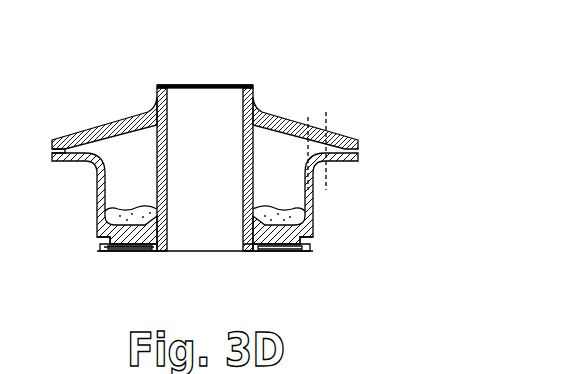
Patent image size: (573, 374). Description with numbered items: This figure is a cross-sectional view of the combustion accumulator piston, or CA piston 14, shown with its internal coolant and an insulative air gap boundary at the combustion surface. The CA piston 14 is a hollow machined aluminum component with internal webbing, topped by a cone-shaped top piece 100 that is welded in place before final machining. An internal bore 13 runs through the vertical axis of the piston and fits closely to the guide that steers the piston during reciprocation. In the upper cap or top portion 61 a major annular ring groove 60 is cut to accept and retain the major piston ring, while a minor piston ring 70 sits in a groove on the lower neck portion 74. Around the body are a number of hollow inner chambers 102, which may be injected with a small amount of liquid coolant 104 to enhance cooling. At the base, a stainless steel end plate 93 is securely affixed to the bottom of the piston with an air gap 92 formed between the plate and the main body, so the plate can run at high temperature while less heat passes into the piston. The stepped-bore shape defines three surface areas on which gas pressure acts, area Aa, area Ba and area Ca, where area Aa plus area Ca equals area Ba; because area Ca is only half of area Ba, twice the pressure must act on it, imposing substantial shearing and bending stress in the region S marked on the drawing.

The internal bore 13 is at (214, 157).
The CA piston 14 is at (251, 86).
The area Ba is at (121, 117).
The upper cap or top portion 61 is at (345, 137).
The major annular ring groove 60 is at (358, 152).
The cone-shaped top piece 100 is at (85, 130).
The hollow inner chambers 102 is at (150, 167).
The liquid coolant 104 is at (275, 208).
The lower neck portion 74 is at (313, 214).
The minor piston ring 70 is at (313, 237).
The air gap 92 is at (140, 252).
The stainless steel end plate 93 is at (105, 252).
The area Ca is at (81, 166).
The area Aa is at (250, 254).
The region S is at (326, 110).